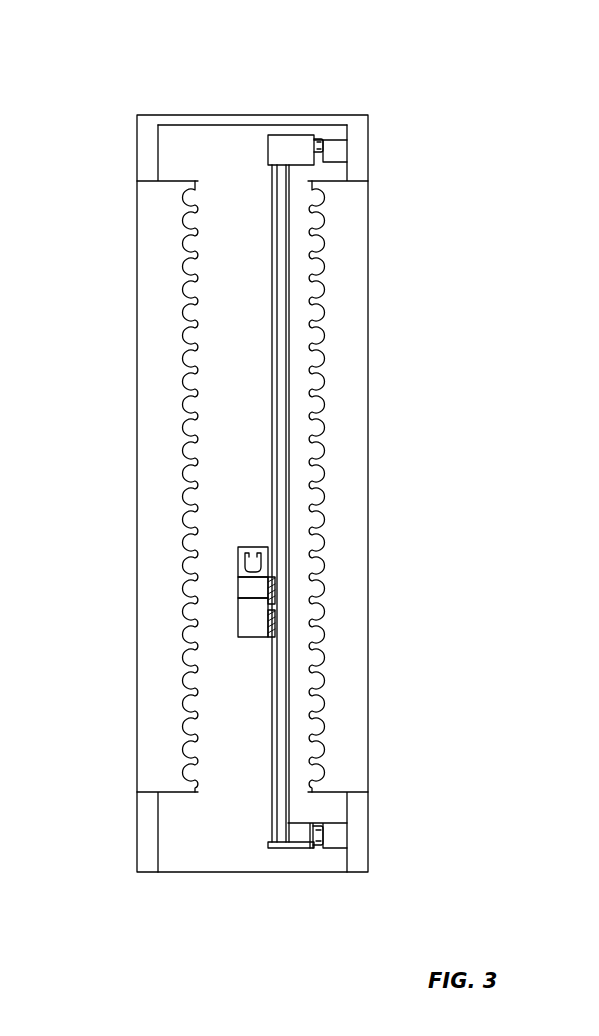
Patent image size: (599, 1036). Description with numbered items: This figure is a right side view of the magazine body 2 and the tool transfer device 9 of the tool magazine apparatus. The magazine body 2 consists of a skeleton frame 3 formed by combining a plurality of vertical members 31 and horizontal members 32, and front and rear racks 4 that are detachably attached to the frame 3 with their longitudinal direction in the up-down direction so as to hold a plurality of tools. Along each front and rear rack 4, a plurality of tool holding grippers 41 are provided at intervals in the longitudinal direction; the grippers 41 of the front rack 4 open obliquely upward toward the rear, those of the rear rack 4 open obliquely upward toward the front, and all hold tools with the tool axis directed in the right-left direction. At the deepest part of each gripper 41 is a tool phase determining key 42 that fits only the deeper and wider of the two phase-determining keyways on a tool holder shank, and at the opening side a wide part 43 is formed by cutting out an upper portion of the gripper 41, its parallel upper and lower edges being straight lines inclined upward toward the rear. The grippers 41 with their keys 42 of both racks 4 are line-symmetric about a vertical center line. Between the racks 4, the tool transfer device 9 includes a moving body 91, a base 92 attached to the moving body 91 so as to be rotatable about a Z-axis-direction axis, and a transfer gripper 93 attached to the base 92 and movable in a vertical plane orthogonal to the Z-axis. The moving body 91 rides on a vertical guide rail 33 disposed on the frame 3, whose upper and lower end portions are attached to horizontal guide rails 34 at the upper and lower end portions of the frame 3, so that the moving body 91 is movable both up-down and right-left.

The magazine body 2 is at (262, 110).
The skeleton frame 3 is at (137, 115).
The racks 4 is at (147, 432).
The tool transfer device 9 is at (237, 637).
The vertical members 31 is at (144, 170).
The horizontal members 32 is at (210, 118).
The vertical guide rail 33 is at (283, 419).
The horizontal guide rails 34 is at (328, 145).
The tool holding grippers 41 is at (187, 264).
The tool phase determining key 42 is at (185, 223).
The wide part 43 is at (196, 235).
The moving body 91 is at (245, 622).
The base 92 is at (247, 588).
The transfer gripper 93 is at (240, 560).